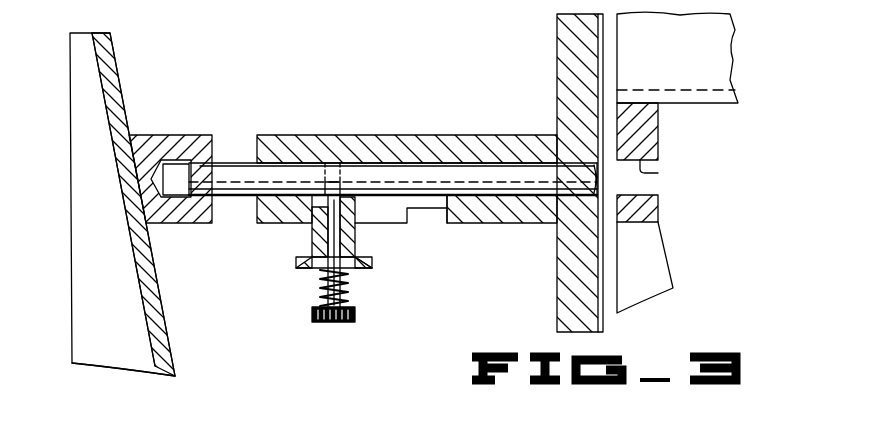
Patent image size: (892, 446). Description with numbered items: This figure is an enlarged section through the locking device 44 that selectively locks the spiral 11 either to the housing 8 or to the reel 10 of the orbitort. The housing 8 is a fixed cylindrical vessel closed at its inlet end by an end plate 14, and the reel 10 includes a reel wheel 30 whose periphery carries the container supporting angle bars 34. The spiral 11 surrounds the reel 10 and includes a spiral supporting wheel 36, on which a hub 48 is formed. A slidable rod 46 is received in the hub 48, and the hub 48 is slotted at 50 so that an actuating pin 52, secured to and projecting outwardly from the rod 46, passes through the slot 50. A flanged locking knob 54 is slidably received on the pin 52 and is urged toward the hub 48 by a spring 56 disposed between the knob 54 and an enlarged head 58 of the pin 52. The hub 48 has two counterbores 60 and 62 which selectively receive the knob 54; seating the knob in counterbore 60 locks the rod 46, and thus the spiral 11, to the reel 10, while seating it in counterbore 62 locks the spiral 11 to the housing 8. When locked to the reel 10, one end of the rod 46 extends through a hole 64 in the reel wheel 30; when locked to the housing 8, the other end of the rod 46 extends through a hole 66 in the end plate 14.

The cylindrical housing 8 is at (112, 73).
The reel 10 is at (736, 24).
The spiral 11 is at (552, 36).
The end plate 14 is at (162, 343).
The reel wheel 30 is at (648, 258).
The container supporting angle bars 34 is at (720, 70).
The spiral supporting wheel 36 is at (557, 92).
The locking device 44 is at (345, 103).
The slidable rod 46 is at (395, 168).
The hub 48 is at (474, 152).
The slot 50 is at (390, 213).
The actuating pin 52 is at (370, 266).
The flanged locking knob 54 is at (300, 263).
The spring 56 is at (313, 287).
The enlarged head 58 is at (335, 324).
The counterbore 60 is at (311, 230).
The counterbore 62 is at (446, 214).
The hole 64 is at (658, 172).
The hole 66 is at (173, 167).